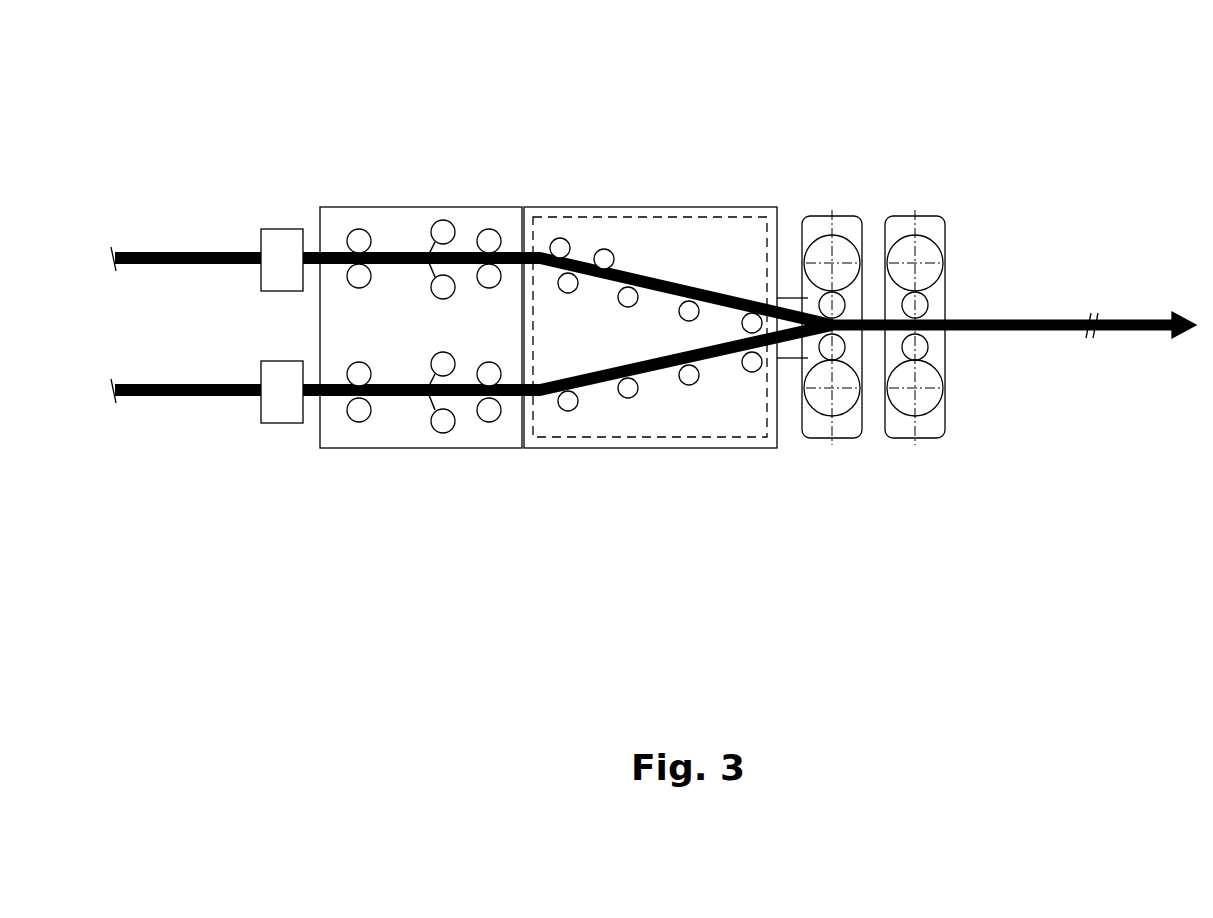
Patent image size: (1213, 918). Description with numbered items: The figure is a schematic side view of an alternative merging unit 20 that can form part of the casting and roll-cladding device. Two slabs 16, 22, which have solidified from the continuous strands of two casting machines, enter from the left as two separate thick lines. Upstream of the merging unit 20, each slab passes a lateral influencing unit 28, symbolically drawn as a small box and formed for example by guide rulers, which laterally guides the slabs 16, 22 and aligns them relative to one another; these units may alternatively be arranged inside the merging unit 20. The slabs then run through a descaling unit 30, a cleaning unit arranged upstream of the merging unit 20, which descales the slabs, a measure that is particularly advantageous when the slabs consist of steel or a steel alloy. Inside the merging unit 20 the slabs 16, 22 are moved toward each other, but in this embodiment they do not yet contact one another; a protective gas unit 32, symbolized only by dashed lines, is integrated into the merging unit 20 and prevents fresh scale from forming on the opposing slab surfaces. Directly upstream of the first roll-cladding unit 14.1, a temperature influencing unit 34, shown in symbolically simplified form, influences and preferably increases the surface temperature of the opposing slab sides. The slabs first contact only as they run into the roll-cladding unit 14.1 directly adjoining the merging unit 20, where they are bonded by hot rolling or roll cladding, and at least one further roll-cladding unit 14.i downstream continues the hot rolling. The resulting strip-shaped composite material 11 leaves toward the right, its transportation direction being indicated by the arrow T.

The slab 22 is at (188, 251).
The slab 16 is at (163, 397).
The lateral influencing unit 28 is at (281, 229).
The descaling unit 30 is at (415, 207).
The merging unit 20 is at (610, 207).
The protective gas unit 32 is at (708, 217).
The temperature influencing unit 34 is at (792, 358).
The roll-cladding unit 14.1 is at (838, 215).
The further roll-cladding unit 14.i is at (920, 215).
The strip-shaped composite material 11 is at (1048, 320).
The transportation direction T is at (1183, 312).